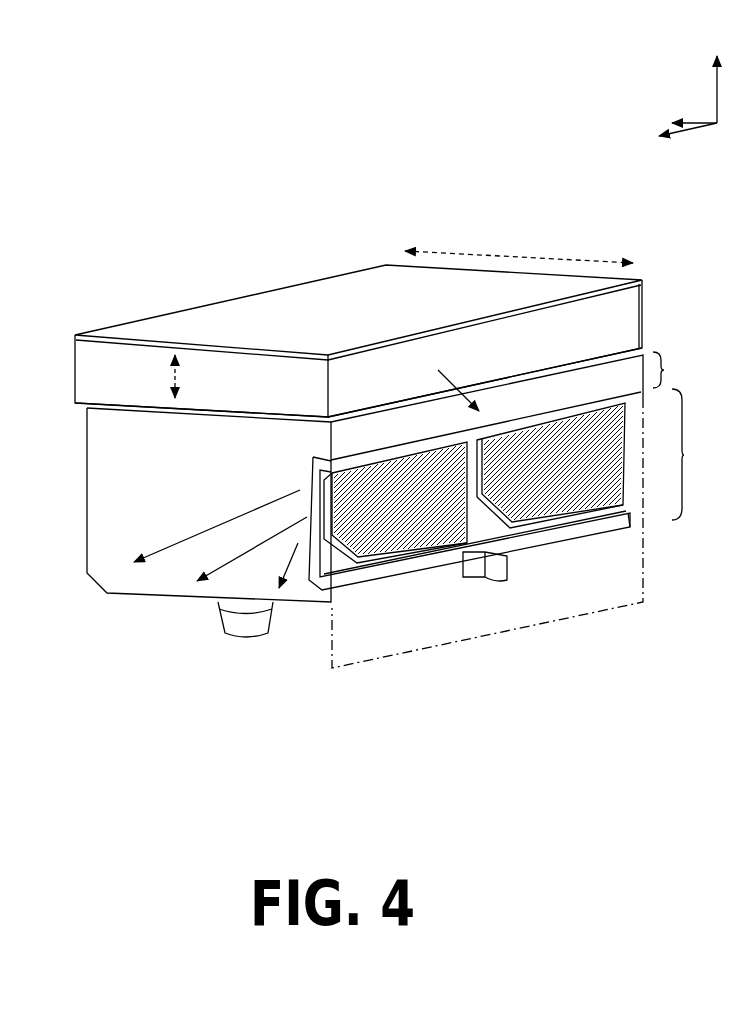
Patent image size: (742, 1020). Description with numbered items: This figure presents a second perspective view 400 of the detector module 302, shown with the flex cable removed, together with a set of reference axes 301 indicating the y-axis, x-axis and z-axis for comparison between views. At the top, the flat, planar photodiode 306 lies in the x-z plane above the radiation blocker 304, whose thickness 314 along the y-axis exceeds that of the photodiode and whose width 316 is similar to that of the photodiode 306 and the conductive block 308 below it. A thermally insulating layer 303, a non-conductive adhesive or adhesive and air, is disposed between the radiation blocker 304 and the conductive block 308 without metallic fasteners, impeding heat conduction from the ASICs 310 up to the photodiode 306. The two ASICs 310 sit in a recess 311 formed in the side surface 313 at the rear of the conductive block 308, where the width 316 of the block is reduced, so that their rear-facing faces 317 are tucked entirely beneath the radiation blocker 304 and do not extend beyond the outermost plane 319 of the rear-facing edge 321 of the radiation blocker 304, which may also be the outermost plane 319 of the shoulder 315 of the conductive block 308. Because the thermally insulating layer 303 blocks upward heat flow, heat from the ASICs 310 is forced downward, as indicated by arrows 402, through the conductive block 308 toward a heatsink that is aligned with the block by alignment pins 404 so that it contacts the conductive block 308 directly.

The second perspective view 400 is at (127, 88).
The reference axes 301 is at (680, 84).
The detector module 302 is at (536, 186).
The radiation blocker 304 is at (648, 298).
The photodiode 306 is at (386, 313).
The width 316 is at (520, 258).
The rear-facing edge 321 is at (544, 356).
The shoulder 315 is at (663, 370).
The thickness 314 is at (175, 385).
The ASICs 310 is at (440, 385).
The thermally insulating layer 303 is at (411, 401).
The side surface 313 is at (342, 437).
The conductive block 308 is at (110, 503).
The recess 311 is at (683, 455).
The arrows 402 is at (212, 528).
The rear-facing faces 317 is at (433, 538).
The outermost plane 319 is at (643, 573).
The alignment pins 404 is at (277, 594).